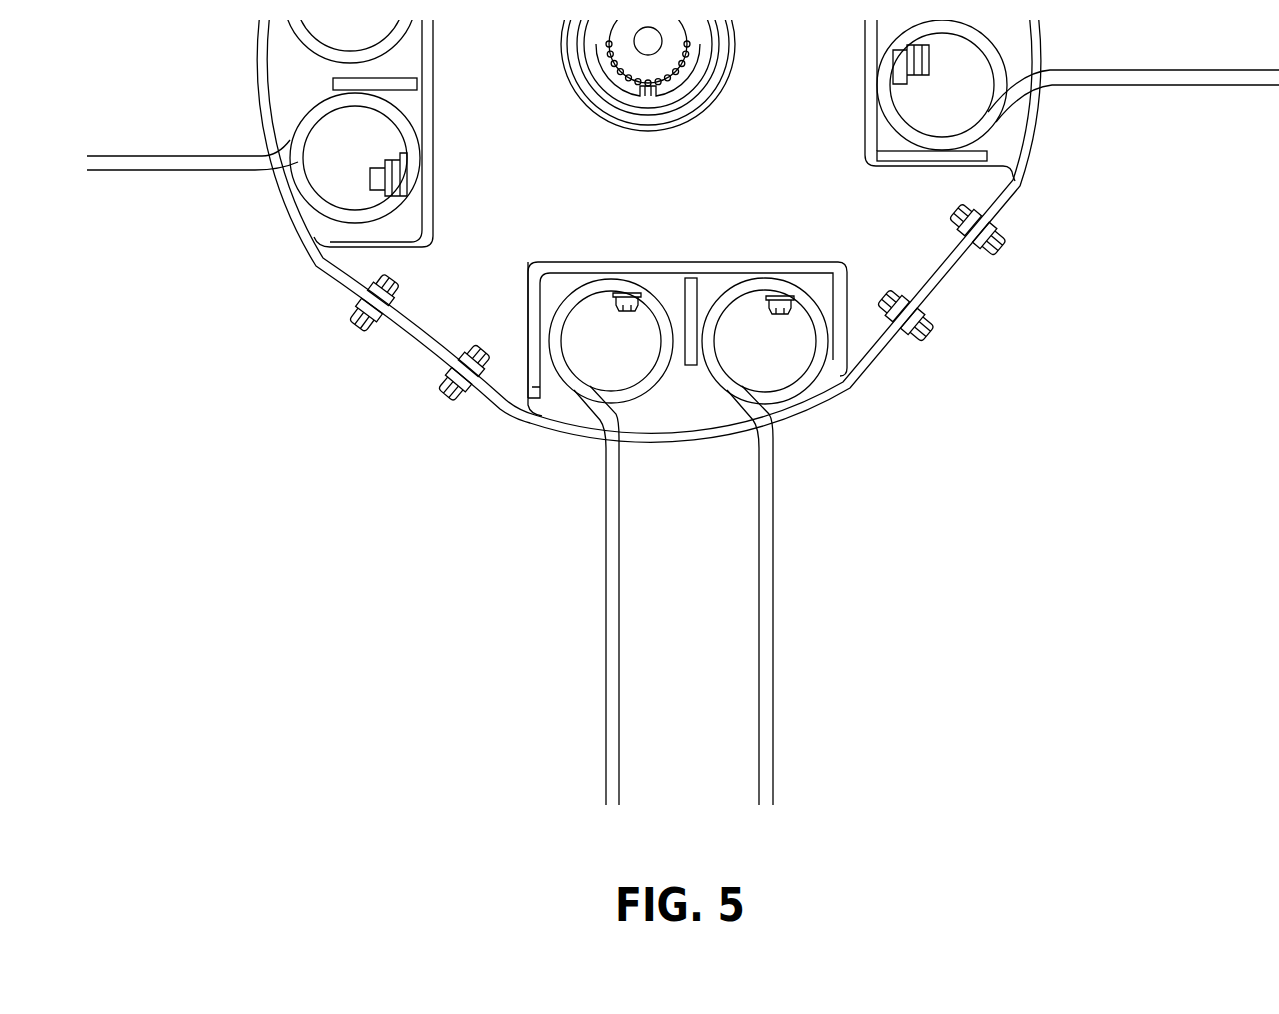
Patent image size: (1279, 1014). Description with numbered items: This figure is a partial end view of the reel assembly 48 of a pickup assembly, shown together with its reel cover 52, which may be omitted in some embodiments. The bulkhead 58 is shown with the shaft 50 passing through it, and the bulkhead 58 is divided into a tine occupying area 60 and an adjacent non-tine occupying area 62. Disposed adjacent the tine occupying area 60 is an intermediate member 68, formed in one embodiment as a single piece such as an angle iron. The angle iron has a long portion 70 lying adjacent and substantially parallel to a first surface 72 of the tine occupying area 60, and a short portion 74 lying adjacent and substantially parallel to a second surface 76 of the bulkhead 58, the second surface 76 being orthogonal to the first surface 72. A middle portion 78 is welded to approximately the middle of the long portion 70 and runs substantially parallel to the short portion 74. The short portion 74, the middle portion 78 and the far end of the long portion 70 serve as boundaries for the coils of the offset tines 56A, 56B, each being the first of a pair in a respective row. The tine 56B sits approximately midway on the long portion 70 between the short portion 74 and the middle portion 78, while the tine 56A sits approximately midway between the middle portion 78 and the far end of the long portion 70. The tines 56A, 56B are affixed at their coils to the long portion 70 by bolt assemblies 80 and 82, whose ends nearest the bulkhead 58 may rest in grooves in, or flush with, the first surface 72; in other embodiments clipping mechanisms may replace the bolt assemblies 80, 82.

The reel assembly 48 is at (683, 402).
The shaft 50 is at (732, 128).
The reel cover 52 is at (830, 405).
The tine 56A is at (772, 582).
The tine 56B is at (606, 580).
The bulkhead 58 is at (920, 249).
The tine occupying area 60 is at (697, 514).
The non-tine occupying area 62 is at (383, 386).
The intermediate member 68 is at (833, 270).
The long portion 70 is at (694, 327).
The first surface 72 is at (650, 264).
The short portion 74 is at (540, 375).
The second surface 76 is at (528, 262).
The middle portion 78 is at (689, 362).
The bolt assembly 80 is at (624, 327).
The bolt assembly 82 is at (779, 330).